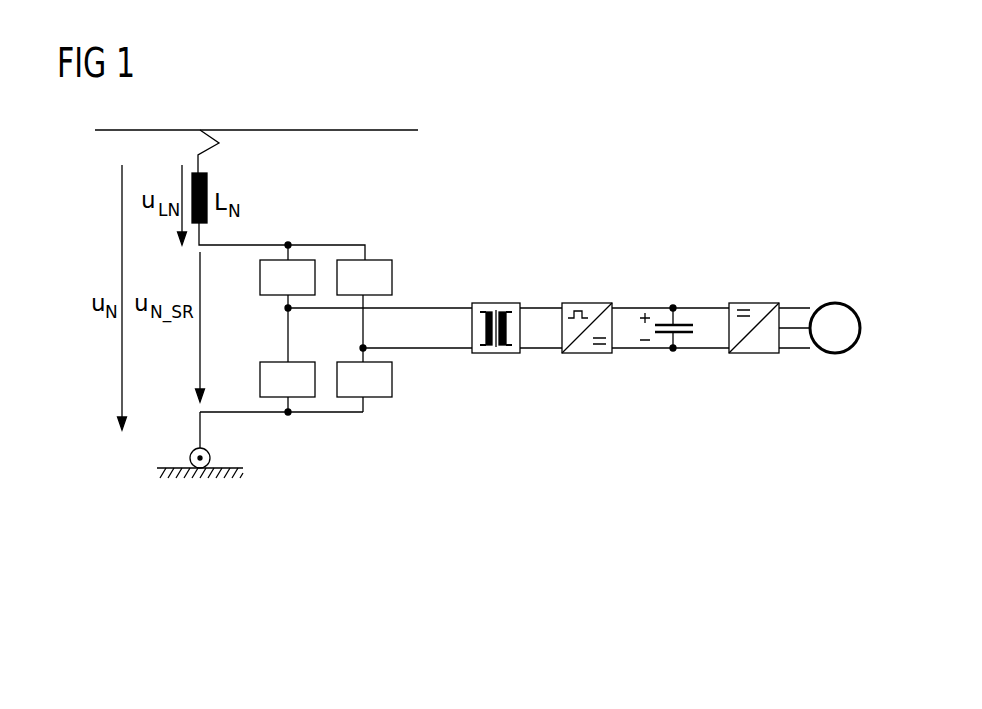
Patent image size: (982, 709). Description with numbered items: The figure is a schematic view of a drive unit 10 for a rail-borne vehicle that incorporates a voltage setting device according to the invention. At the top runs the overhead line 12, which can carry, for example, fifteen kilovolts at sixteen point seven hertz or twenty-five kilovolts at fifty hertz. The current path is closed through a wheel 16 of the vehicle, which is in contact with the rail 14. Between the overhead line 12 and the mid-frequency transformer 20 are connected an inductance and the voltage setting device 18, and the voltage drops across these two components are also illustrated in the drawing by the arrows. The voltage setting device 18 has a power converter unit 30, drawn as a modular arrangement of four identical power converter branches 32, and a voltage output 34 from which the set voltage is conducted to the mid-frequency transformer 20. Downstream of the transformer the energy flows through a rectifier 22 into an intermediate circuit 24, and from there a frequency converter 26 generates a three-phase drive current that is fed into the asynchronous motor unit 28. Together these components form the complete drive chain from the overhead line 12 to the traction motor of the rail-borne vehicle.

The drive unit 10 is at (576, 128).
The overhead line 12 is at (342, 130).
The rail 14 is at (213, 470).
The wheel 16 is at (190, 452).
The voltage setting device 18 is at (438, 250).
The mid-frequency transformer 20 is at (497, 355).
The rectifier 22 is at (587, 355).
The intermediate circuit 24 is at (674, 372).
The frequency converter 26 is at (755, 355).
The asynchronous motor unit 28 is at (836, 353).
The power converter unit 30 is at (346, 452).
The power converter branches 32 is at (304, 260).
The voltage output 34 is at (428, 374).